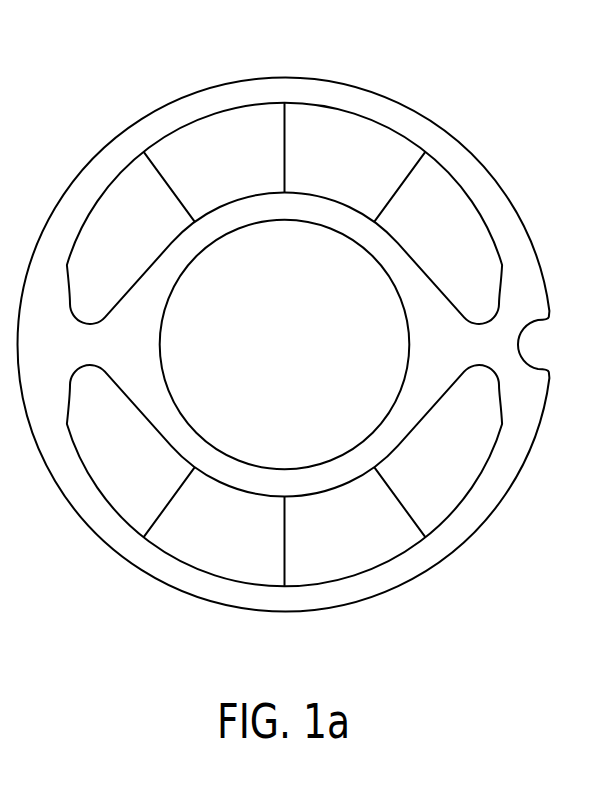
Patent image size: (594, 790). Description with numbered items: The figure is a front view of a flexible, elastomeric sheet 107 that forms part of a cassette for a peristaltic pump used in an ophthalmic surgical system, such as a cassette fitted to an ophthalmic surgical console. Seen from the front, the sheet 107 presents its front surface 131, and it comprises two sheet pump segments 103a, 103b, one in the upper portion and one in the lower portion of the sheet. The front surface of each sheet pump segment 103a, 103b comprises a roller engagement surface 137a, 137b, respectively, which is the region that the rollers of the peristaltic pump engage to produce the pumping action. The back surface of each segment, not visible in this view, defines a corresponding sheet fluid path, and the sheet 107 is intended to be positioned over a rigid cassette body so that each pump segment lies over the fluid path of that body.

The sheet pump segment 103a is at (240, 143).
The roller engagement surface 137a is at (353, 130).
The flexible sheet 107 is at (468, 150).
The front surface 131 is at (284, 345).
The sheet pump segment 103b is at (242, 547).
The roller engagement surface 137b is at (357, 555).